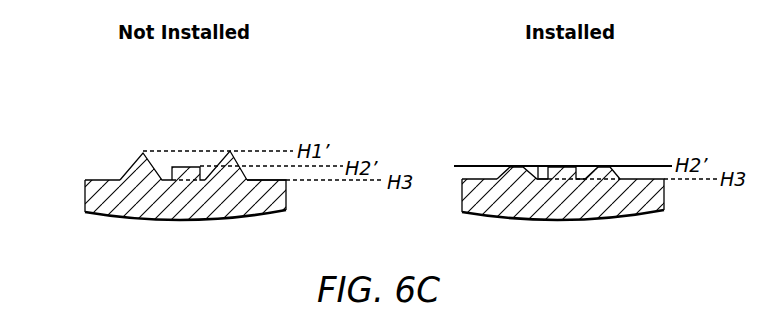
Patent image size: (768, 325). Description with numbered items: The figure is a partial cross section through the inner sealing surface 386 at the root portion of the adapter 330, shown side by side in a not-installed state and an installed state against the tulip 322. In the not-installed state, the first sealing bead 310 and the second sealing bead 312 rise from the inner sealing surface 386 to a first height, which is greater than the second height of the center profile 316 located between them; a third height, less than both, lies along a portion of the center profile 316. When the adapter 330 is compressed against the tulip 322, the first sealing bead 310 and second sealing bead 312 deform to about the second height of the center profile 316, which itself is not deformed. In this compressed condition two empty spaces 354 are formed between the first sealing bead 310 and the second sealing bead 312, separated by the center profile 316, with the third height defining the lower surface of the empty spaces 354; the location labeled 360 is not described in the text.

The first sealing bead 310 is at (125, 173).
The second sealing bead 312 is at (238, 168).
The center profile 316 is at (186, 167).
The tulip 322 is at (472, 165).
The adapter 330 is at (256, 201).
The empty spaces 354 is at (538, 176).
The mating surface 360 is at (645, 166).
The inner sealing surface 386 is at (266, 180).